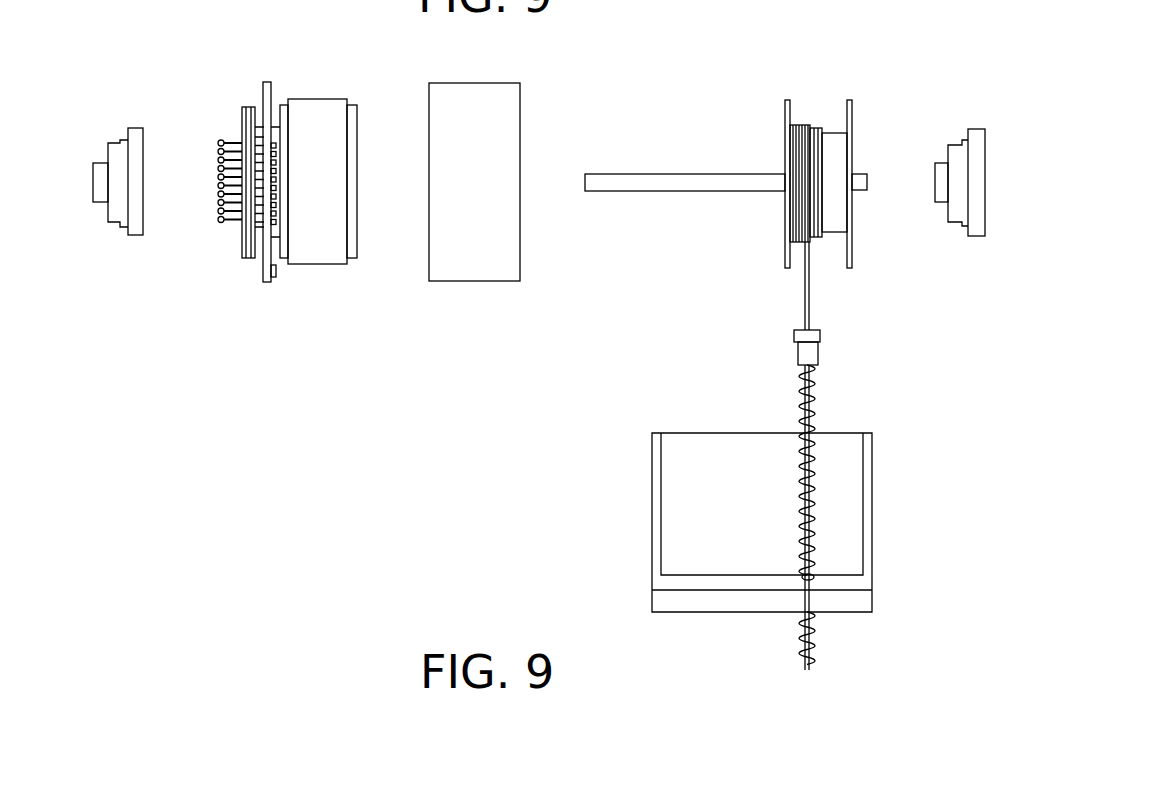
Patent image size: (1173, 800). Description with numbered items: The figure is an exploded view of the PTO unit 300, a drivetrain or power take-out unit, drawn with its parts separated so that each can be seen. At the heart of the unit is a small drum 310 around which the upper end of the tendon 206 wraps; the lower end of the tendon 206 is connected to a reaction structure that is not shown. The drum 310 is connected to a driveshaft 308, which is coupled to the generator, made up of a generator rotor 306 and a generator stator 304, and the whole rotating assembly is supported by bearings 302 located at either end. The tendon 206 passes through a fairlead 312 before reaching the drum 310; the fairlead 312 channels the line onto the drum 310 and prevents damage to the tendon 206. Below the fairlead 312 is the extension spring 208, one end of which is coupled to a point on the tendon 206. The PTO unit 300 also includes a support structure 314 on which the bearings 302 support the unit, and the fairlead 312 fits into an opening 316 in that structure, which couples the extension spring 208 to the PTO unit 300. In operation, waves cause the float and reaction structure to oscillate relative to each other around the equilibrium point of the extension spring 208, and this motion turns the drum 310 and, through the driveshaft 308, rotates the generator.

The PTO unit 300 is at (168, 56).
The bearings 302 is at (120, 142).
The generator stator 304 is at (286, 80).
The generator rotor 306 is at (452, 278).
The driveshaft 308 is at (635, 188).
The drum 310 is at (785, 112).
The tendon 206 is at (805, 310).
The fairlead 312 is at (820, 338).
The extension spring 208 is at (818, 412).
The support structure 314 is at (652, 472).
The opening 316 is at (812, 577).